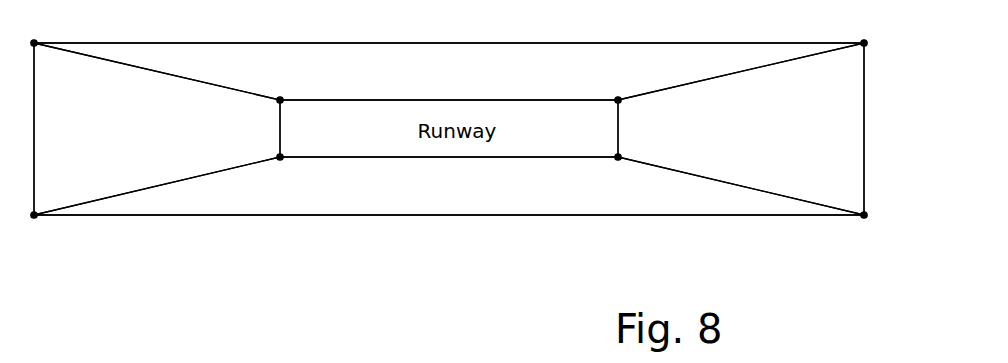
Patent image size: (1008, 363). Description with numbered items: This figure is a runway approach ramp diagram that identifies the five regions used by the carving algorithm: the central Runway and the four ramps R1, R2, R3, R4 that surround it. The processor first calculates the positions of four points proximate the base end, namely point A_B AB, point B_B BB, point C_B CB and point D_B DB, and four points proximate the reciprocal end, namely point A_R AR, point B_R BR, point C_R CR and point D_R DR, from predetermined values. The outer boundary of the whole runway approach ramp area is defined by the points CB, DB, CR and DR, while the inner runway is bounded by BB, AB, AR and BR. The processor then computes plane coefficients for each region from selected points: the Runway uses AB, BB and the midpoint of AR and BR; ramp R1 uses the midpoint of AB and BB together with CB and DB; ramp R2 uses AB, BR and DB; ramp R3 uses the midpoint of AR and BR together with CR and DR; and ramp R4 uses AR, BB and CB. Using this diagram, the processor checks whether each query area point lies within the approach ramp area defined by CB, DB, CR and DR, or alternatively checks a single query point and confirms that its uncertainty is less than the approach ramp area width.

The ramp R1 is at (157, 129).
The ramp R2 is at (449, 186).
The ramp R3 is at (741, 129).
The ramp R4 is at (449, 71).
The point C_B CB is at (34, 25).
The point D_B DB is at (40, 237).
The point A_B AB is at (286, 175).
The point B_B BB is at (286, 83).
The point A_R AR is at (627, 82).
The point B_R BR is at (627, 174).
The point C_R CR is at (883, 227).
The point D_R DR is at (879, 28).